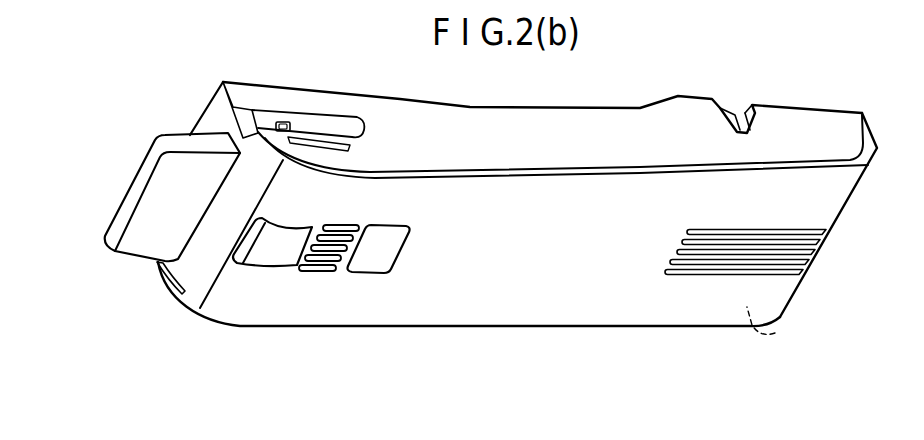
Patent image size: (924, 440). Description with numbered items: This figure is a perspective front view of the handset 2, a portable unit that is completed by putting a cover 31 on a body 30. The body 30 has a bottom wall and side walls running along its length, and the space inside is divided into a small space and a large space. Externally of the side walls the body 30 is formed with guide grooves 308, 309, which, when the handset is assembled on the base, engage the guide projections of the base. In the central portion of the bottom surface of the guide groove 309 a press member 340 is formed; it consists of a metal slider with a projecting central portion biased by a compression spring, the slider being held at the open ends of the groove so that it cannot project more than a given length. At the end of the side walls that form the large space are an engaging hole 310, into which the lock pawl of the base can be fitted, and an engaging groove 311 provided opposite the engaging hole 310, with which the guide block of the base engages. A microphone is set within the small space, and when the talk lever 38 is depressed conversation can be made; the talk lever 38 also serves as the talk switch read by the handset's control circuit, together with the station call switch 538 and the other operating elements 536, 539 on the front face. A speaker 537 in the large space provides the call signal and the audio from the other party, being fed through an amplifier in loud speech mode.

The handset 2 is at (543, 106).
The body 30 is at (428, 124).
The cover 31 is at (543, 303).
The talk lever 38 is at (128, 247).
The guide groove 308 is at (166, 280).
The guide groove 309 is at (303, 127).
The press member 340 is at (280, 120).
The engaging groove 311 is at (735, 110).
The station call switch 538 is at (272, 270).
The microphone louvers 536 is at (318, 272).
The key 539 is at (370, 273).
The speaker 537 is at (776, 270).
The engaging hole 310 is at (775, 333).